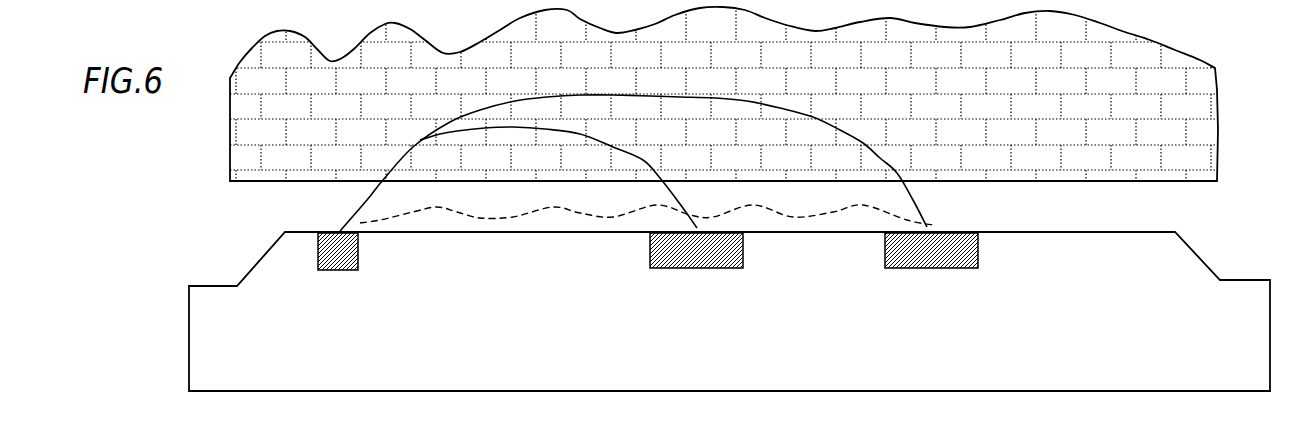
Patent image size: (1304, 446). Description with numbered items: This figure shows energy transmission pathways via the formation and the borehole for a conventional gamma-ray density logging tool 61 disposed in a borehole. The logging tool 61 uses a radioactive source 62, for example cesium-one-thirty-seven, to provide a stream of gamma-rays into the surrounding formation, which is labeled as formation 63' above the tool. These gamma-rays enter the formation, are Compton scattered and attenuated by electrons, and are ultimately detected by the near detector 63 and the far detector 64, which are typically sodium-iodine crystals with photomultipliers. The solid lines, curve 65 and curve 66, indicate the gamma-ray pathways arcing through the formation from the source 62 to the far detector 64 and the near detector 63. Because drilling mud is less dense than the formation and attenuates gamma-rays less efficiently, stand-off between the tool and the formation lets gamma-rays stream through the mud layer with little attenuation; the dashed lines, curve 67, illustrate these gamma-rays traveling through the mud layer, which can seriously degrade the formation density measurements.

The gamma-ray density logging tool 61 is at (735, 385).
The radioactive source 62 is at (340, 269).
The near detector 63 is at (696, 269).
The far detector 64 is at (926, 269).
The formation 63' is at (724, 90).
The curve 65 is at (752, 90).
The curve 66 is at (645, 160).
The curve 67 is at (457, 205).